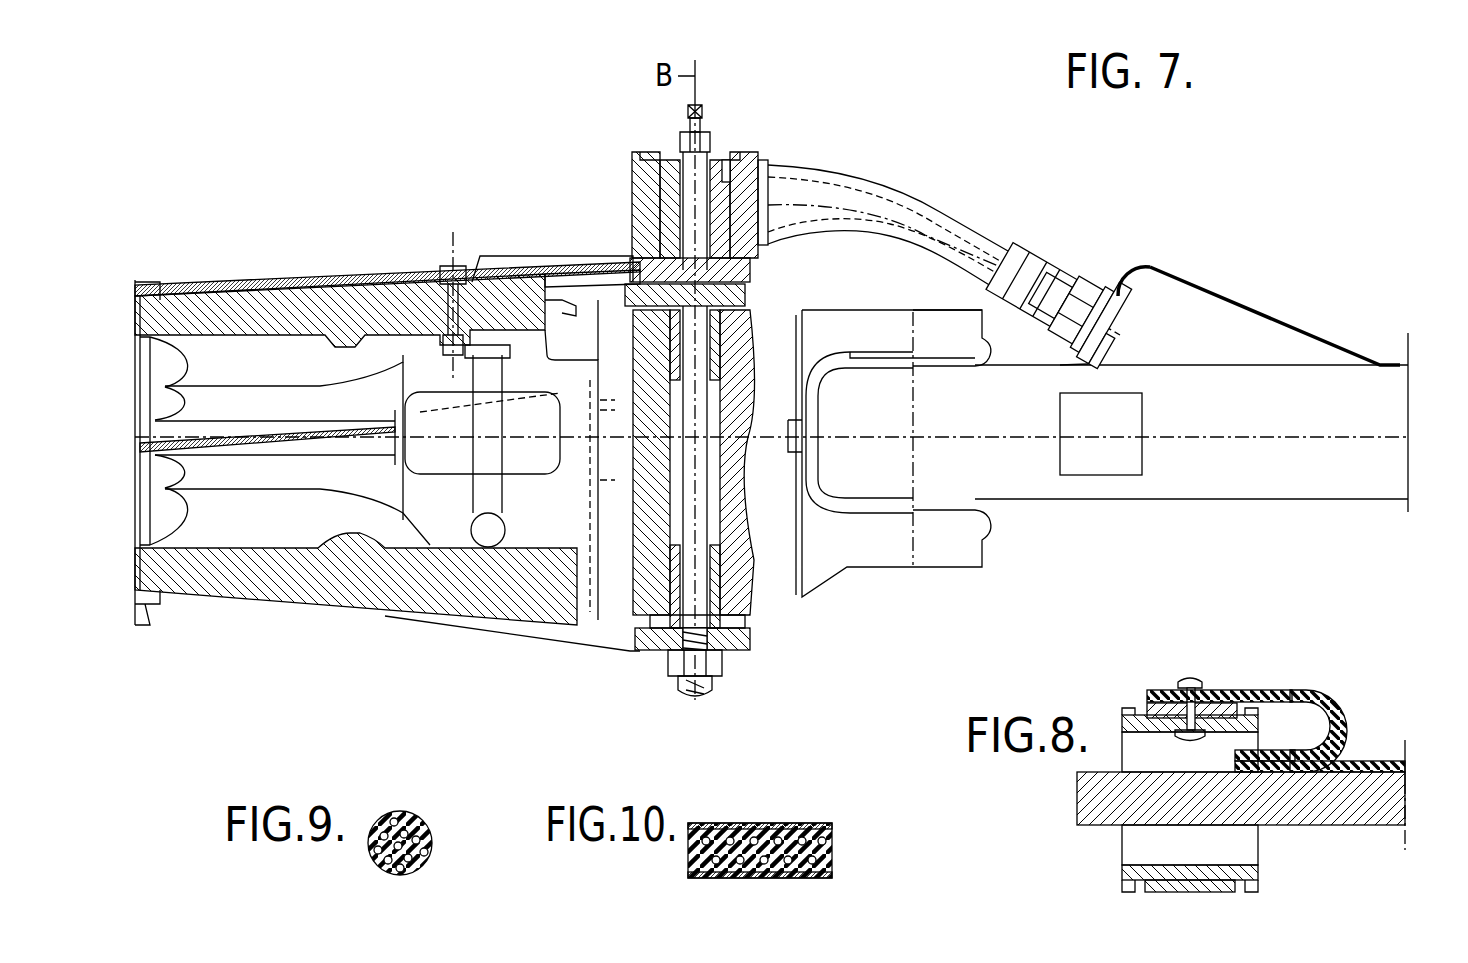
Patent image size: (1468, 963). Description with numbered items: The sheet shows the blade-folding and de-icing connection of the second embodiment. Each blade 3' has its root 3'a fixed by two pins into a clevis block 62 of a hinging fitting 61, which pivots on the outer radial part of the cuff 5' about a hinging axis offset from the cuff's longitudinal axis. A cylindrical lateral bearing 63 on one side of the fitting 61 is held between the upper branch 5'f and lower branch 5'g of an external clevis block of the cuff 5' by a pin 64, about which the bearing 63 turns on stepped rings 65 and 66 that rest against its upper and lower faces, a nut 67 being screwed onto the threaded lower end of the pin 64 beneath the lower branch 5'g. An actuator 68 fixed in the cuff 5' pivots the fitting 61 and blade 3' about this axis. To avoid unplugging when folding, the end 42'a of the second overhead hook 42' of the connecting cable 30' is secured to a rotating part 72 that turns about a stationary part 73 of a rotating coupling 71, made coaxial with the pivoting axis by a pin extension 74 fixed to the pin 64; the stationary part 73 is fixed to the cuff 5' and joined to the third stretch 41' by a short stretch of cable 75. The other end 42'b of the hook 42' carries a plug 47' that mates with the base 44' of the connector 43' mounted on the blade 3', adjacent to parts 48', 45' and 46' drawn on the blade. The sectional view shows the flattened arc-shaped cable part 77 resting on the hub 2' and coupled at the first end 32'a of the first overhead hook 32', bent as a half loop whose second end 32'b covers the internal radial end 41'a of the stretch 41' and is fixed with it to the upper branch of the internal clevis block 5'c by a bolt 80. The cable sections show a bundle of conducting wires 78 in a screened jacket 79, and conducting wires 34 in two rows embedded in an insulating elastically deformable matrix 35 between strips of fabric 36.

In FIG. 7, the connecting cable 30' is at (377, 331).
In FIG. 7, the third stretch of cable 41' is at (387, 298).
In FIG. 7, the short stretch of cable 75 is at (553, 275).
In FIG. 7, the upper branch 5'f is at (592, 248).
In FIG. 7, the stationary part 73 is at (633, 258).
In FIG. 7, the rotating coupling 71 is at (640, 150).
In FIG. 7, the pin extension 74 is at (703, 175).
In FIG. 7, the rotating part 72 is at (745, 185).
In FIG. 7, the end of the hook 42'a is at (819, 185).
In FIG. 7, the second overhead hook 42' is at (944, 248).
In FIG. 7, the hose coupling 48' is at (1049, 250).
In FIG. 7, the end of the hook 42'b is at (1083, 236).
In FIG. 7, the plug 47' is at (1089, 270).
In FIG. 7, the connector 43' is at (1128, 279).
In FIG. 7, the guard hood 45' is at (1142, 296).
In FIG. 7, the guard plate 46' is at (1275, 306).
In FIG. 7, the base 44' is at (1145, 331).
In FIG. 7, the bearing 63 is at (760, 315).
In FIG. 7, the hinging fitting 61 is at (763, 343).
In FIG. 7, the stepped ring 65 is at (673, 348).
In FIG. 7, the blade 3' is at (1191, 440).
In FIG. 7, the root 3'a is at (890, 485).
In FIG. 7, the clevis block 62 is at (972, 548).
In FIG. 7, the pin 64 is at (755, 602).
In FIG. 7, the lower branch 5'g is at (730, 646).
In FIG. 7, the nut 67 is at (713, 660).
In FIG. 7, the stepped ring 66 is at (660, 630).
In FIG. 7, the actuator 68 is at (590, 492).
In FIG. 7, the cuff 5' is at (387, 481).
In FIG. 8, the internal clevis block 5'c is at (1171, 779).
In FIG. 8, the second end 32'b is at (1183, 676).
In FIG. 8, the bolt 80 is at (1200, 688).
In FIG. 8, the internal radial end 41'a is at (1222, 670).
In FIG. 8, the first overhead hook 32' is at (1321, 705).
In FIG. 8, the first end 32'a is at (1275, 735).
In FIG. 8, the cable part 77 is at (1366, 766).
In FIG. 8, the hub 2' is at (1241, 810).
In FIG. 9, the screened jacket 79 is at (418, 823).
In FIG. 9, the conducting wires 78 is at (427, 857).
In FIG. 10, the conducting wires 34 is at (752, 832).
In FIG. 10, the insulating and elastically deformable matrix 35 is at (823, 842).
In FIG. 10, the strips of fabric 36 is at (767, 878).